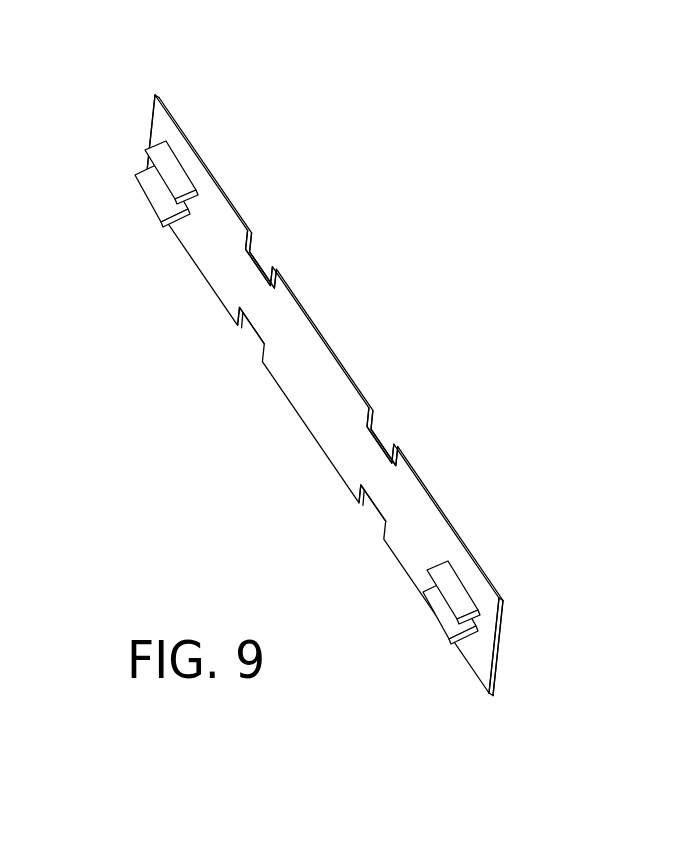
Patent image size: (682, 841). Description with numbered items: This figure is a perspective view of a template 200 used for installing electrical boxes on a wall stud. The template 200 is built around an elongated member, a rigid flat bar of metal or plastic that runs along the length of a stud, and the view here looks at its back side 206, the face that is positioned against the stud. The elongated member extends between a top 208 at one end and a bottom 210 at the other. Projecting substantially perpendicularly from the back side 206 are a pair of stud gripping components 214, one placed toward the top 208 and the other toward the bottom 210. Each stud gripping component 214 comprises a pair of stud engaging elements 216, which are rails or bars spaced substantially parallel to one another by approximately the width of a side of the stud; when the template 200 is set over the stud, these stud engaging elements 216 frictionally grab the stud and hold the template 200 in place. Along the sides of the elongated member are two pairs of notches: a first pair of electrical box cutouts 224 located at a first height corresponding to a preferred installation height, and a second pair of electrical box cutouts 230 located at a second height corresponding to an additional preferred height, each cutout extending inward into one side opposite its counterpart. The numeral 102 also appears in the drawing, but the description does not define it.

The template 200 is at (267, 382).
The edge of substrate 102 is at (333, 314).
The back side 206 is at (287, 381).
The top 208 is at (152, 125).
The bottom 210 is at (495, 667).
The stud gripping component 214 is at (126, 158).
The stud engaging element 216 is at (166, 219).
The first pair of electrical box cutouts 224 is at (400, 424).
The second pair of electrical box cutouts 230 is at (273, 247).